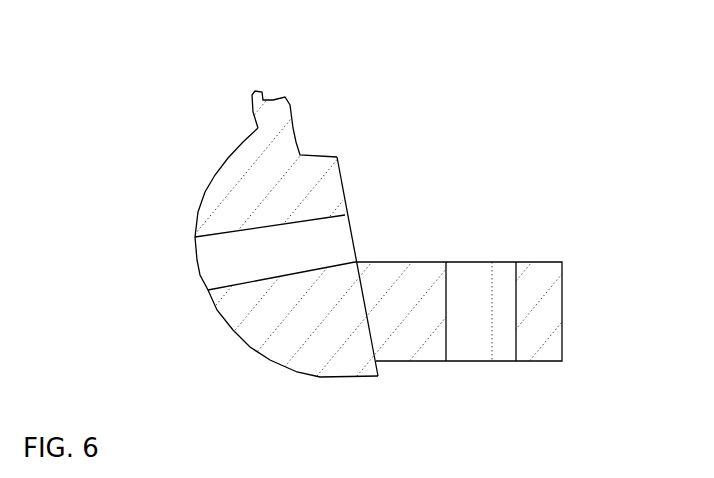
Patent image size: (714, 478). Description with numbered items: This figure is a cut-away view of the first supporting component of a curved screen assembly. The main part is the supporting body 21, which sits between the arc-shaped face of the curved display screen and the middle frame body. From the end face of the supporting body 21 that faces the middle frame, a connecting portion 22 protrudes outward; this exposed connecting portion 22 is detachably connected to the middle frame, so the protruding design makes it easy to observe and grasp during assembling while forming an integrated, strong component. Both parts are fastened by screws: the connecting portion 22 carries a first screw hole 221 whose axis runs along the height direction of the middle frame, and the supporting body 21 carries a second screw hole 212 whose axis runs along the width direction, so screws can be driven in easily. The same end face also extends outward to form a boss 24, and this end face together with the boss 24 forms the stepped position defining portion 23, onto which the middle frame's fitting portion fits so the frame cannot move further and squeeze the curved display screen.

The supporting body 21 is at (375, 195).
The connecting portion 22 is at (375, 233).
The position defining portion 23 is at (300, 155).
The boss 24 is at (342, 195).
The second screw hole 212 is at (223, 268).
The first screw hole 221 is at (475, 293).